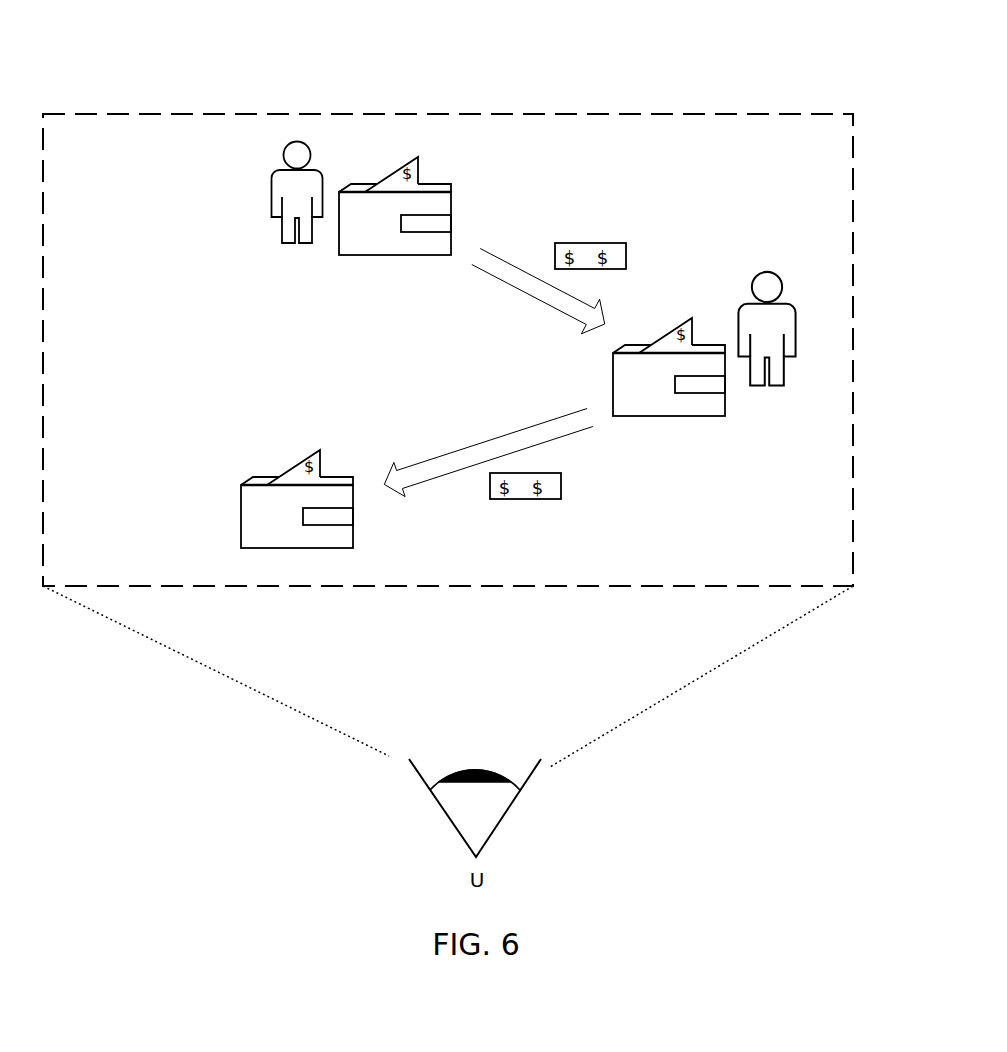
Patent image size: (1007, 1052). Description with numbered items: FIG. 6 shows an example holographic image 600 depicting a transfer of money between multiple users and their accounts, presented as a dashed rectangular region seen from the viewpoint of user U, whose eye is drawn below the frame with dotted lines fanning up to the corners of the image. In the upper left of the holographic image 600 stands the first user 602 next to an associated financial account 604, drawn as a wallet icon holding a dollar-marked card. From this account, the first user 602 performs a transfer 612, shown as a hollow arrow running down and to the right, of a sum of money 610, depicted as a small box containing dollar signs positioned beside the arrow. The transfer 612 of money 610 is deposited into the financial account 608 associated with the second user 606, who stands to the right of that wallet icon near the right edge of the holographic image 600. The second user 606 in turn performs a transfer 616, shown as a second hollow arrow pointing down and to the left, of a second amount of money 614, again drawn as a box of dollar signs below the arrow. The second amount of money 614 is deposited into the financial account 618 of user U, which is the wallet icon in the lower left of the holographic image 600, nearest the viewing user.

The holographic image 600 is at (856, 189).
The first user 602 is at (265, 180).
The financial account 604 is at (365, 192).
The second user 606 is at (780, 322).
The financial account 608 is at (698, 403).
The sum of money 610 is at (590, 250).
The transfer 612 is at (535, 286).
The second amount of money 614 is at (548, 487).
The transfer 616 is at (458, 466).
The financial account 618 is at (265, 518).